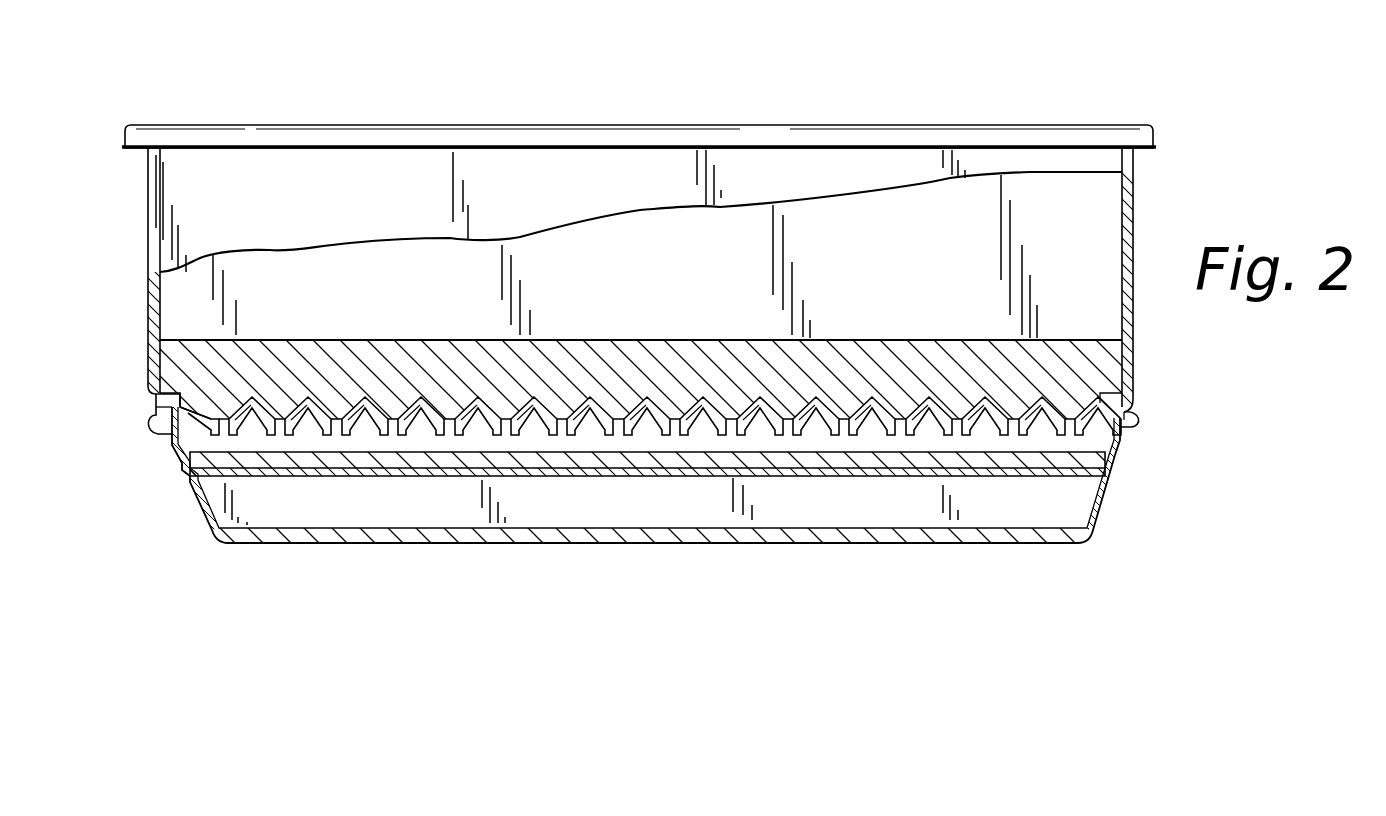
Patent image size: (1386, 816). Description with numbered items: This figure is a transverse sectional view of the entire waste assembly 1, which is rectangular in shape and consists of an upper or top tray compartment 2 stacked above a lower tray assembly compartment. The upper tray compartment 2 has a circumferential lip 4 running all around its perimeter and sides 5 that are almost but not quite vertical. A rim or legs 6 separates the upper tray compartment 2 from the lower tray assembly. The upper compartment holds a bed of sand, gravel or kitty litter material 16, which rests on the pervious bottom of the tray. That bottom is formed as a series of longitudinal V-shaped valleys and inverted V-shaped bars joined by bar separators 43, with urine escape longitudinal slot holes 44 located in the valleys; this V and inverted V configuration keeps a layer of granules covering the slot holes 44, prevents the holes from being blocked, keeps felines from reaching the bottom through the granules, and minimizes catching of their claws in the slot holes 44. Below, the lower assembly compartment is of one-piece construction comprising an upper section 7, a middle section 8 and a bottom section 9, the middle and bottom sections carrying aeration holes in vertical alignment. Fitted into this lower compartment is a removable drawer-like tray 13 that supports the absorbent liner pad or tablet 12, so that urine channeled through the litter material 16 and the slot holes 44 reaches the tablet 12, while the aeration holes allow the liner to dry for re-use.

The assembly 1 is at (868, 92).
The upper tray compartment 2 is at (410, 163).
The circumferential lip 4 is at (729, 137).
The sides 5 is at (547, 162).
The rim or legs 6 is at (1128, 402).
The upper section 7 is at (1140, 420).
The middle section 8 is at (172, 443).
The bottom section 9 is at (200, 512).
The liner pad or tablet 12 is at (730, 462).
The drawer-like tray 13 is at (803, 476).
The kitty litter material 16 is at (455, 350).
The bar separators 43 is at (505, 430).
The longitudinal slot holes 44 is at (225, 430).